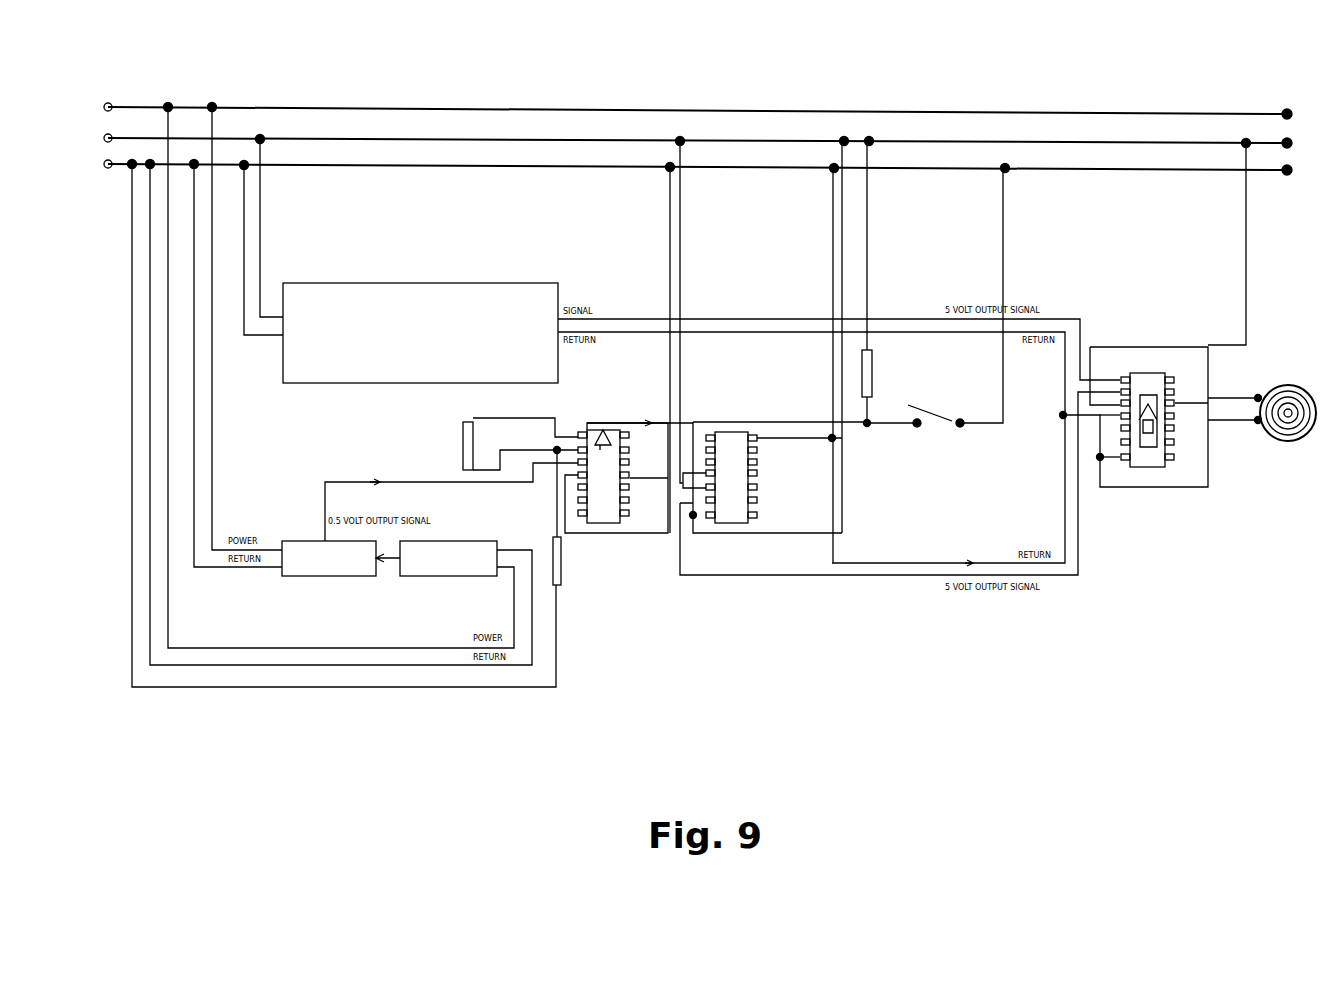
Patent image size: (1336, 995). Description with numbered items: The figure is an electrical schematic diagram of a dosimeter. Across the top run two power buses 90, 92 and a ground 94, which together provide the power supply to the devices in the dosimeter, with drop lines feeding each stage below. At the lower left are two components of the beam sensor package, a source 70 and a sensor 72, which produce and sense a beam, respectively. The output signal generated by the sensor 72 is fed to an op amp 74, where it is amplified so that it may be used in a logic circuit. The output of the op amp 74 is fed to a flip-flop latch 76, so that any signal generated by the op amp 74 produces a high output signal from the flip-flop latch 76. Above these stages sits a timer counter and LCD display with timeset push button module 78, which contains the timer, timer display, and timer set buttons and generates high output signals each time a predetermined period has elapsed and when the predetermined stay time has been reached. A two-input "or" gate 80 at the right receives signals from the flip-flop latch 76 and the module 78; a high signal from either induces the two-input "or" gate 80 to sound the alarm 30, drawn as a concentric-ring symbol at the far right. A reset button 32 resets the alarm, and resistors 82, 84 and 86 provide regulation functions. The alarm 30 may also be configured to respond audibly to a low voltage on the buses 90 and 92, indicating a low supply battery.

The alarm 30 is at (1288, 441).
The reset button 32 is at (940, 420).
The source 70 is at (437, 576).
The sensor 72 is at (322, 576).
The op amp 74 is at (602, 523).
The flip-flop latch 76 is at (728, 523).
The timer counter and LCD display with timeset push button module 78 is at (432, 351).
The two-input "or" gate 80 is at (1145, 470).
The resistor 82 is at (463, 443).
The resistor 84 is at (562, 592).
The resistor 86 is at (880, 374).
The power bus 90 is at (360, 107).
The power bus 92 is at (462, 138).
The ground 94 is at (563, 164).